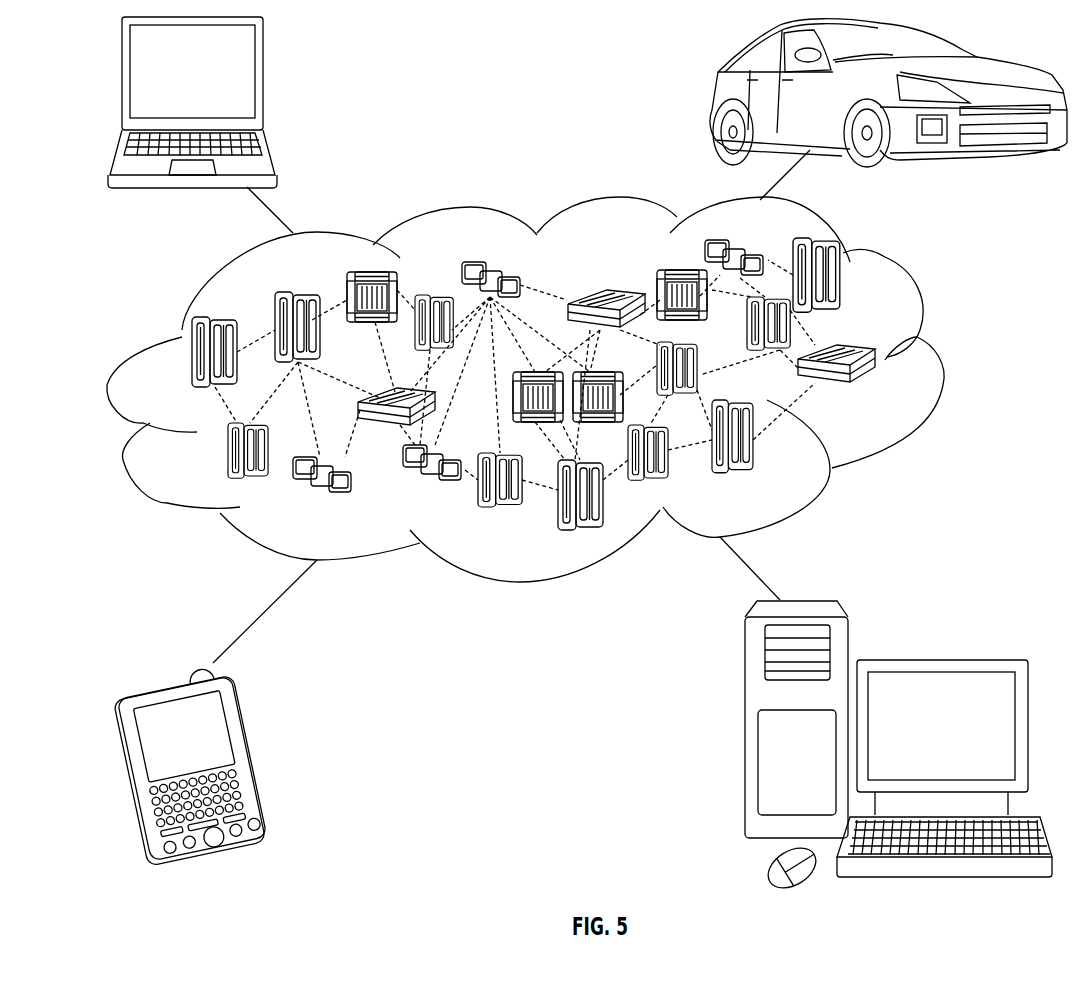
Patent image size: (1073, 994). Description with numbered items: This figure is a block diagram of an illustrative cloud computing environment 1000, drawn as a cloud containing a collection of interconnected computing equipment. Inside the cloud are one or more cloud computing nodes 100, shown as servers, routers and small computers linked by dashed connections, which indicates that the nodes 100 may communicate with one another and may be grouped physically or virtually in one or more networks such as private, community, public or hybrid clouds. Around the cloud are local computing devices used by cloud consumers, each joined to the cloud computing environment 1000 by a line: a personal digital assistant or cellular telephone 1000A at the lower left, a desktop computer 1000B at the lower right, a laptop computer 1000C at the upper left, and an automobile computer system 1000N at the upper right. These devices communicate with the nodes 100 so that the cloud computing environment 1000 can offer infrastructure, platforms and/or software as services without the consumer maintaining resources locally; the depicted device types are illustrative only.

The cloud computing nodes 100 is at (880, 393).
The cloud computing environment 1000 is at (940, 363).
The personal digital assistant (PDA) or cellular telephone 1000A is at (253, 758).
The desktop computer 1000B is at (938, 660).
The laptop computer 1000C is at (265, 82).
The automobile computer system 1000N is at (712, 98).